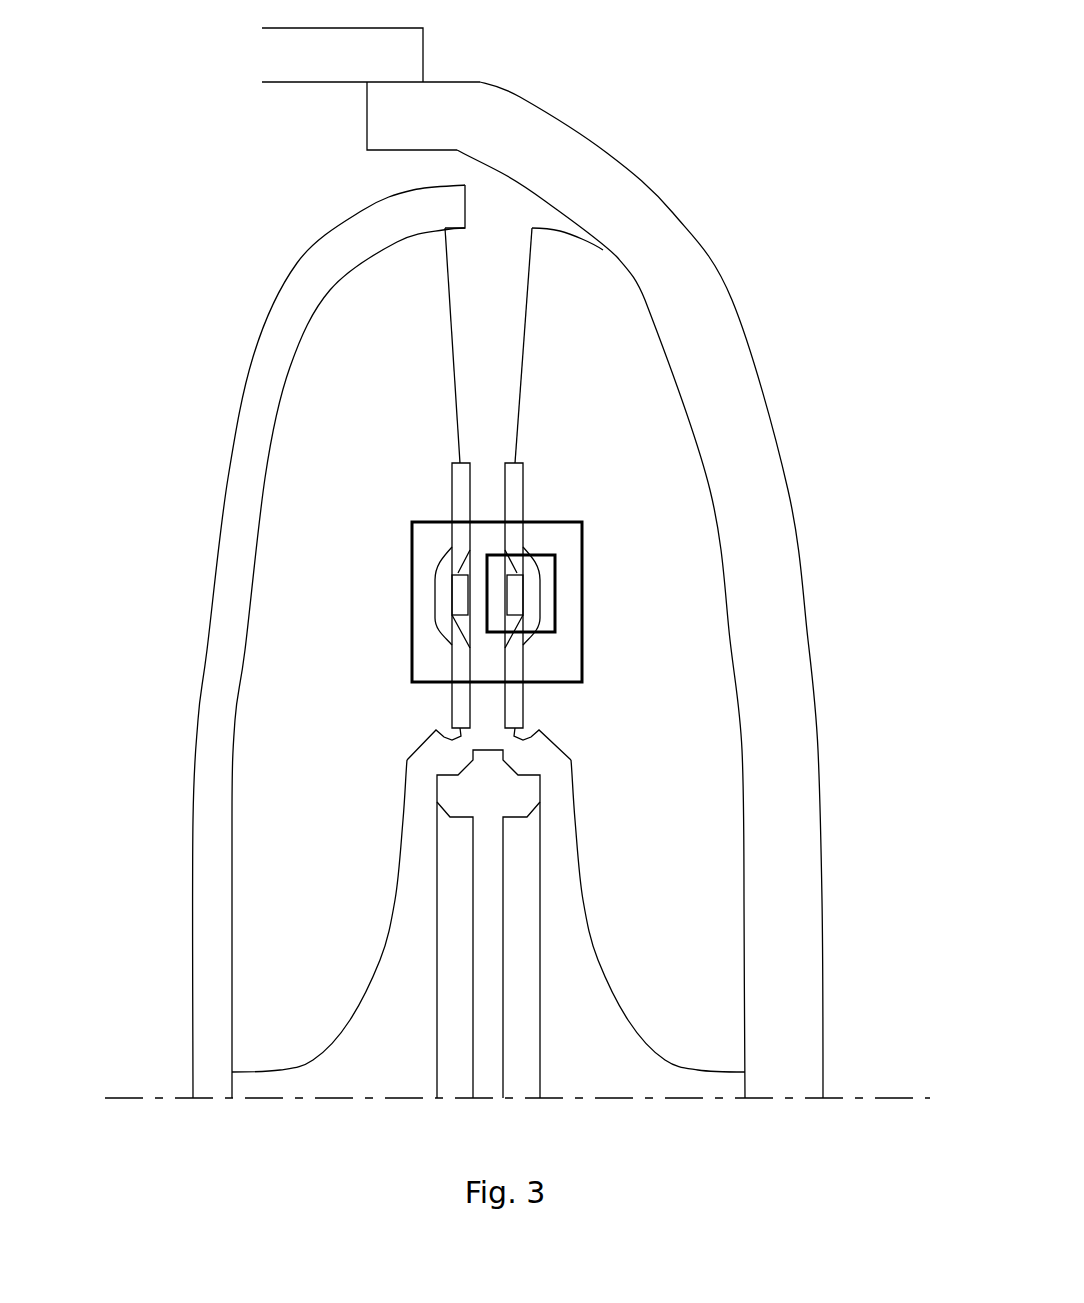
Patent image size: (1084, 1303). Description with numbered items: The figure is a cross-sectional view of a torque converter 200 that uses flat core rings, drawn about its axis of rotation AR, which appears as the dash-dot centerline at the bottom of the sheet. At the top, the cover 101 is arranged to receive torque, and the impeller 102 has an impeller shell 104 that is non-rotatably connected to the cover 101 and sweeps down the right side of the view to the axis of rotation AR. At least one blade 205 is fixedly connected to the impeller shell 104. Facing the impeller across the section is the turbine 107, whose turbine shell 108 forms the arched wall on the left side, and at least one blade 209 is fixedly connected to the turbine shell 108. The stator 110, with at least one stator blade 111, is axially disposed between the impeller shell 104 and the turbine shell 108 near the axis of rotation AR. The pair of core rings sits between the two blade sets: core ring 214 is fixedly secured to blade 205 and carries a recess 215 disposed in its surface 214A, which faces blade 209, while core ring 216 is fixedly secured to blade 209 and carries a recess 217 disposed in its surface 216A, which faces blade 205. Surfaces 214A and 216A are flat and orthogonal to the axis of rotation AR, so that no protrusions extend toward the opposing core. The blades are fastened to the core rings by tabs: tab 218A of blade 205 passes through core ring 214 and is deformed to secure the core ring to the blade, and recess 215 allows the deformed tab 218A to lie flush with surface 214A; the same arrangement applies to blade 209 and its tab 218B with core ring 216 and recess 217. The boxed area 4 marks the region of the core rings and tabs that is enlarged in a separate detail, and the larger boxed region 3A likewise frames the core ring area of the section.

The torque converter 200 is at (238, 112).
The cover 101 is at (427, 57).
The impeller shell 104 is at (710, 260).
The impeller 102 is at (793, 312).
The turbine 107 is at (200, 260).
The turbine shell 108 is at (270, 333).
The blade 209 is at (366, 345).
The blade 205 is at (565, 363).
The recess 217 is at (477, 562).
The recess 215 is at (499, 562).
The detail region 3A is at (582, 553).
The area 4 is at (556, 614).
The core ring 216 is at (450, 652).
The core ring 214 is at (527, 702).
The tab 218B is at (450, 598).
The tab 218A is at (527, 598).
The surface 216A is at (462, 667).
The surface 214A is at (512, 688).
The stator 110 is at (415, 879).
The stator blade 111 is at (437, 982).
The axis of rotation AR is at (858, 1098).